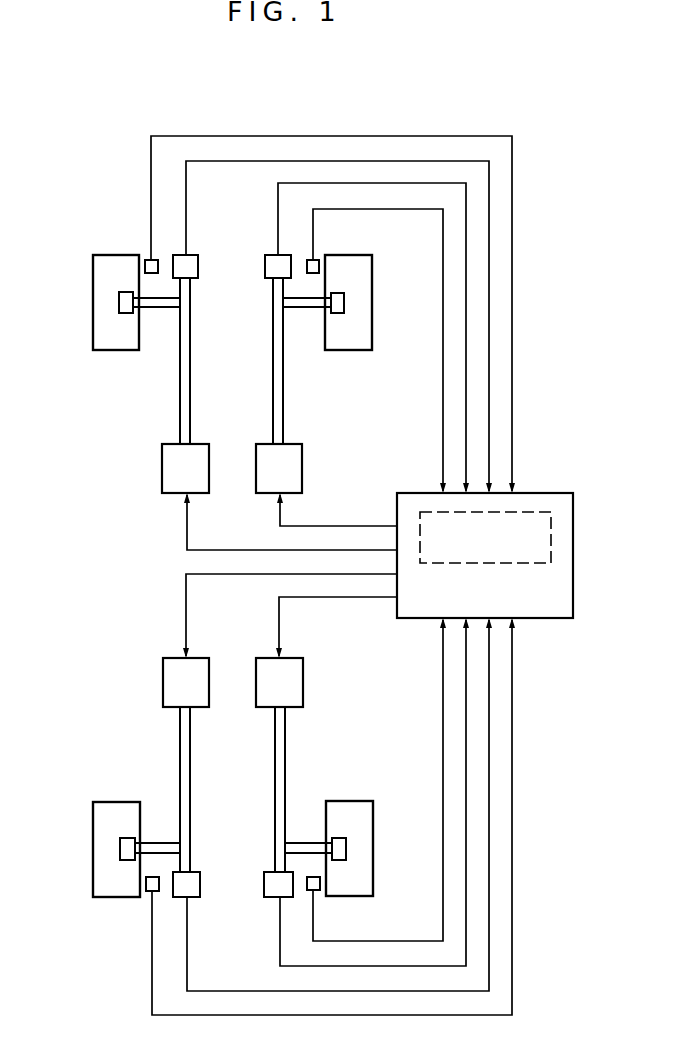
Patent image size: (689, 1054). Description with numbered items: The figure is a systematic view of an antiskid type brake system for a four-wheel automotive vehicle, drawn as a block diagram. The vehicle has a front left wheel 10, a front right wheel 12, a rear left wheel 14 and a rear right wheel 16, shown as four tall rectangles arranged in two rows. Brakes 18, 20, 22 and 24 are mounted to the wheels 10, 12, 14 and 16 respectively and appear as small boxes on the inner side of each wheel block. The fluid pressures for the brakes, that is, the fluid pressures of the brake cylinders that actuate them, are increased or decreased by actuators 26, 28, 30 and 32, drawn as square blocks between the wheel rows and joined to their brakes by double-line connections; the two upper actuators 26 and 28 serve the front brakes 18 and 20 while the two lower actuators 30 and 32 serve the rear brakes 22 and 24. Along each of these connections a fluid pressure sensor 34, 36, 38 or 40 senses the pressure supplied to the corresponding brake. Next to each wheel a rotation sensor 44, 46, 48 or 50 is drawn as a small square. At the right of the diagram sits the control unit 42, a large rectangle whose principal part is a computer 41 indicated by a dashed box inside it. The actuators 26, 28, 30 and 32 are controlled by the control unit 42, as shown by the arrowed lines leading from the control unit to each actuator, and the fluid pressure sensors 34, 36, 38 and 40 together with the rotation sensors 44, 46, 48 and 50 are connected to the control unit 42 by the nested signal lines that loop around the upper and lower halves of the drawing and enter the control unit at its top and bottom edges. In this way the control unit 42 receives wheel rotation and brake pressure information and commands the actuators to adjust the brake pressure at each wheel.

The front left wheel 10 is at (118, 350).
The front right wheel 12 is at (350, 350).
The rear left wheel 14 is at (118, 802).
The rear right wheel 16 is at (350, 801).
The brake 18 is at (119, 300).
The brake 20 is at (344, 300).
The brake 22 is at (120, 849).
The brake 24 is at (346, 849).
The actuator 26 is at (162, 468).
The actuator 28 is at (302, 470).
The actuator 30 is at (163, 686).
The actuator 32 is at (303, 682).
The fluid pressure sensor 34 is at (198, 262).
The fluid pressure sensor 36 is at (265, 268).
The fluid pressure sensor 38 is at (200, 873).
The fluid pressure sensor 40 is at (264, 883).
The computer 41 is at (551, 527).
The control unit 42 is at (573, 600).
The rotation sensor 44 is at (148, 259).
The rotation sensor 46 is at (312, 259).
The rotation sensor 48 is at (148, 891).
The rotation sensor 50 is at (314, 891).